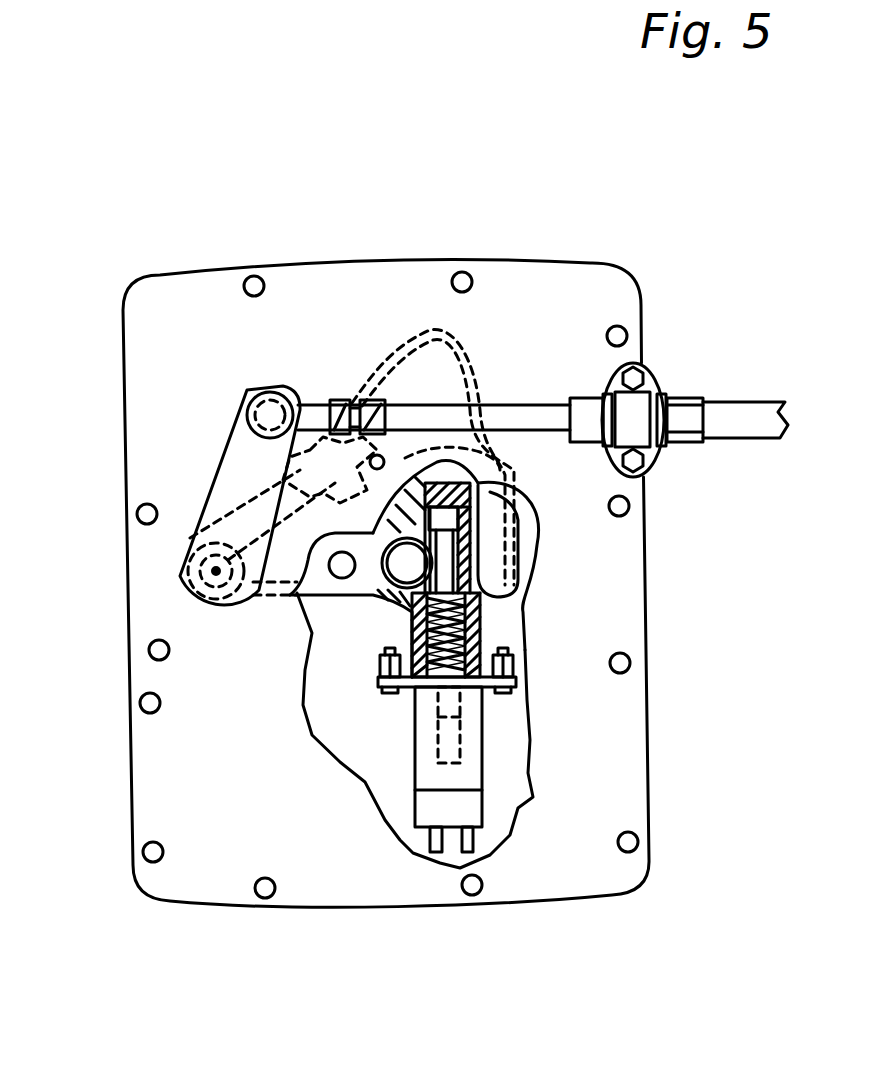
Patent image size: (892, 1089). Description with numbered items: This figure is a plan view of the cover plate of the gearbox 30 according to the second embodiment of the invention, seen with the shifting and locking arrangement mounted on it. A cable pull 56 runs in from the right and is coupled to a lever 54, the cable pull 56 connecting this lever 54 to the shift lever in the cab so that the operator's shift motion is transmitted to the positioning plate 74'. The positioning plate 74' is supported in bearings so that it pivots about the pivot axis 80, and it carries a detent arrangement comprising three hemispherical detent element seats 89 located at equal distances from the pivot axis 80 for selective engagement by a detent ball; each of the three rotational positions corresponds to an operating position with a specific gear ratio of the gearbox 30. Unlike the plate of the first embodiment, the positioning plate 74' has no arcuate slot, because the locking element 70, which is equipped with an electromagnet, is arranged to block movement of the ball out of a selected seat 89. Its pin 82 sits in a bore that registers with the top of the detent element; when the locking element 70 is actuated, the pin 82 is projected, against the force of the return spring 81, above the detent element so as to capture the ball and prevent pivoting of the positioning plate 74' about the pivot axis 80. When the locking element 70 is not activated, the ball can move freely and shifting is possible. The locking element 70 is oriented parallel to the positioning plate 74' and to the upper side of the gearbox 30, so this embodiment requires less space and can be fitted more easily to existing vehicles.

The gearbox 30 is at (676, 888).
The lever 54 is at (225, 445).
The cable pull 56 is at (507, 404).
The locking element 70 is at (490, 613).
The positioning plate 74' is at (444, 433).
The pivot axis 80 is at (216, 571).
The return spring 81 is at (460, 645).
The pin 82 is at (452, 520).
The detent element seats 89 is at (388, 405).